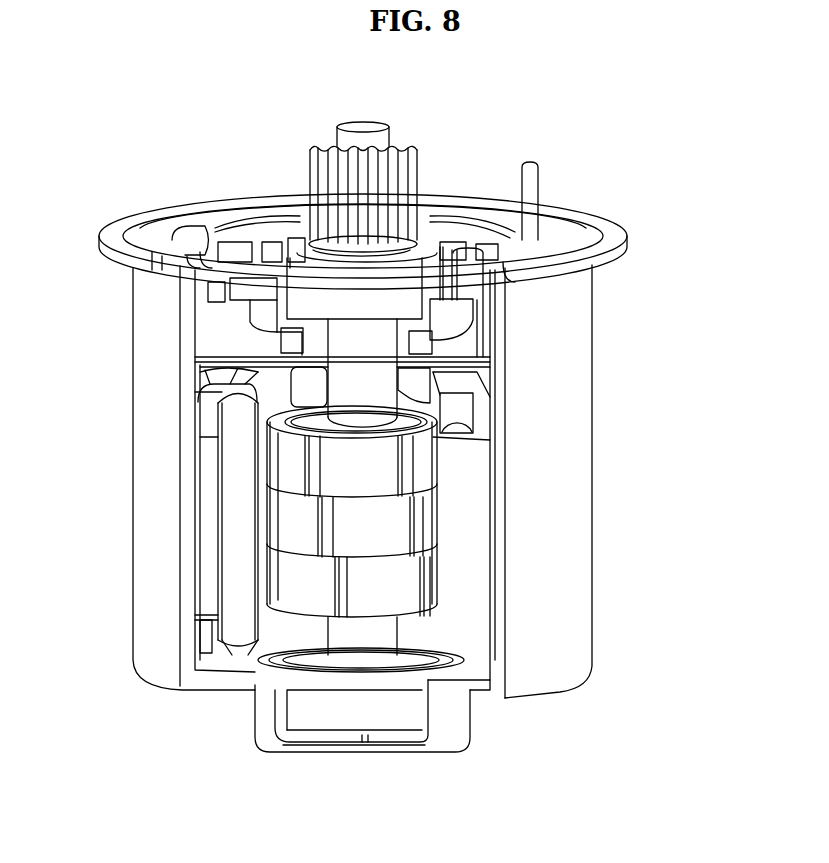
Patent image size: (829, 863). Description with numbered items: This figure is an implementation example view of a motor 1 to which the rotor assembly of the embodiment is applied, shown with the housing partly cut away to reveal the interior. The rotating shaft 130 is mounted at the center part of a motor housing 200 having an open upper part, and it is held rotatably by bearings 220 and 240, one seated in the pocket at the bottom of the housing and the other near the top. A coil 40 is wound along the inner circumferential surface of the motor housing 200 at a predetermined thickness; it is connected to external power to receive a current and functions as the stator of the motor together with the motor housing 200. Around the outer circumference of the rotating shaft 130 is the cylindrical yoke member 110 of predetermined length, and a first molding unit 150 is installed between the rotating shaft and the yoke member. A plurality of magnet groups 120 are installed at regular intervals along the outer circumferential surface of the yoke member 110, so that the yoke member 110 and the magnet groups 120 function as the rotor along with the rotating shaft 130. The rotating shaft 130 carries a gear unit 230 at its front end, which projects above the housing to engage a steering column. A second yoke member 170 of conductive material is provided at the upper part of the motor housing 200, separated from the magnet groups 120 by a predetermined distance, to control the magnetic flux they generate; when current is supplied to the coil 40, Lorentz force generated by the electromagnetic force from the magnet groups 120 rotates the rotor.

The motor 1 is at (683, 296).
The coil 40 is at (235, 517).
The yoke member 110 is at (262, 405).
The magnet groups 120 is at (300, 582).
The rotating shaft 130 is at (343, 645).
The first molding unit 150 is at (250, 392).
The second yoke member 170 is at (240, 220).
The motor housing 200 is at (577, 551).
The bearing 220 is at (387, 702).
The gear unit 230 is at (423, 165).
The bearing 240 is at (317, 290).